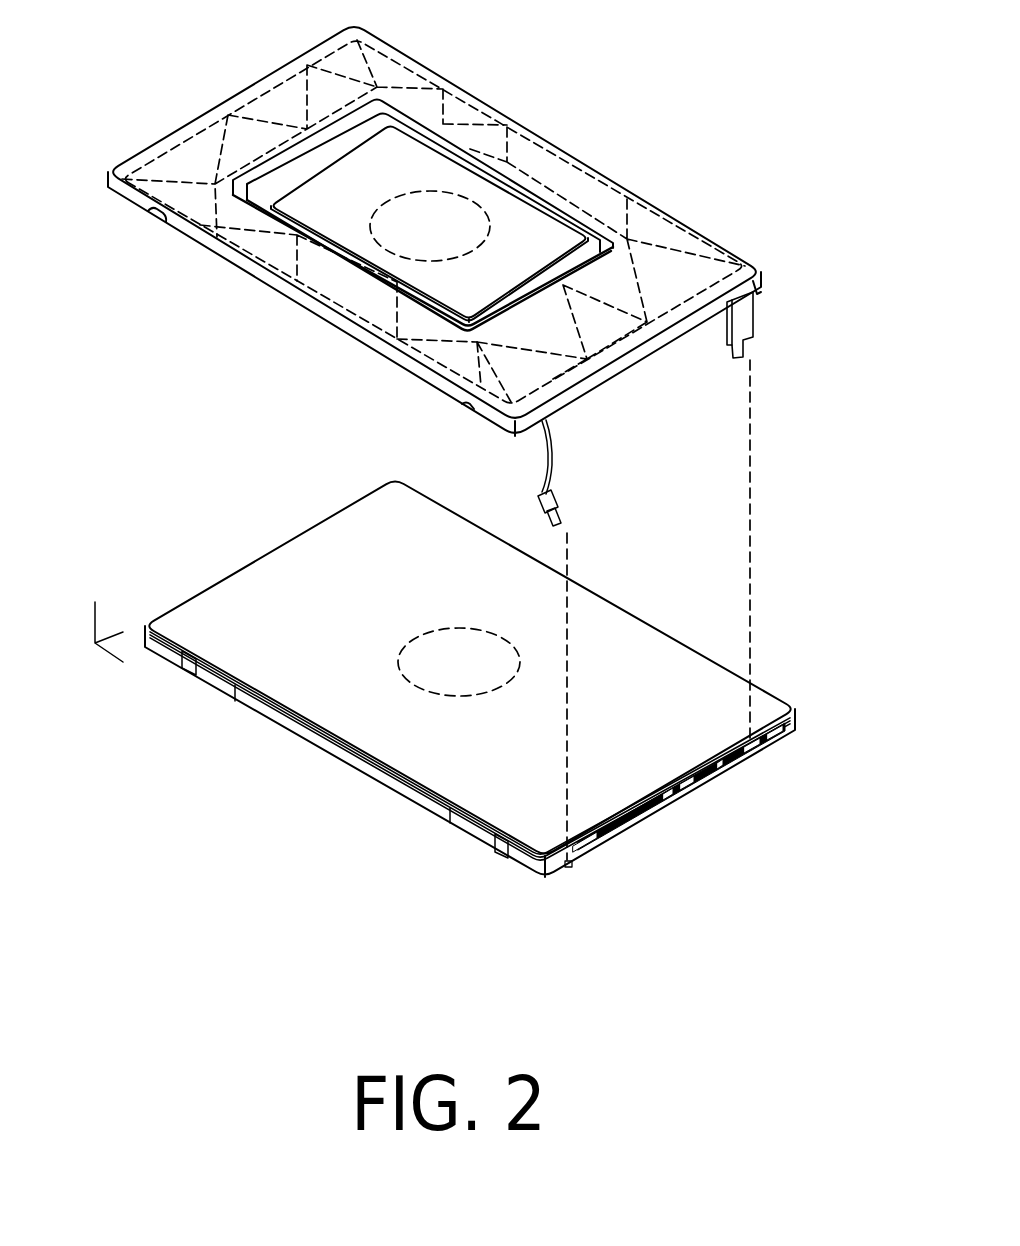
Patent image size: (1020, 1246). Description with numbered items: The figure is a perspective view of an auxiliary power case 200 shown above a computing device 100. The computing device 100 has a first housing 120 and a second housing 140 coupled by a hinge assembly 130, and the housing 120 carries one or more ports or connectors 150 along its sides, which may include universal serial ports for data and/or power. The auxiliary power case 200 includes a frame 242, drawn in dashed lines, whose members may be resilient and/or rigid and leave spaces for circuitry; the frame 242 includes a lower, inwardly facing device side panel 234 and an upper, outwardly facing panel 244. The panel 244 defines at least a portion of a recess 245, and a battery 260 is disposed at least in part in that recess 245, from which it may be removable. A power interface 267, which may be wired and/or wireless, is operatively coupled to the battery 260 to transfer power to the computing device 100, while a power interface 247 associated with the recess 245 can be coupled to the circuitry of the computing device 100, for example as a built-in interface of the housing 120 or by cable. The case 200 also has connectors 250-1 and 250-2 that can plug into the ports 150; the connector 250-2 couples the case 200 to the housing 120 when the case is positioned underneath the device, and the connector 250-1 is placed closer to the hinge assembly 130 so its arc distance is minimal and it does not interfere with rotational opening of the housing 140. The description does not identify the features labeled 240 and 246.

The computing device 100 is at (214, 505).
The first housing 120 is at (413, 795).
The hinge assembly 130 is at (494, 848).
The second housing 140 is at (302, 720).
The ports or connectors 150 is at (733, 790).
The auxiliary power case 200 is at (680, 118).
The device side panel 234 is at (343, 345).
The housing 240 is at (707, 230).
The frame 242 is at (401, 62).
The panel 244 is at (516, 116).
The recess 245 is at (601, 256).
The top surface region 246 is at (560, 334).
The power interface 247 is at (402, 652).
The connector 250-1 is at (553, 443).
The connector 250-2 is at (748, 319).
The battery 260 is at (518, 207).
The power interface 267 is at (416, 191).